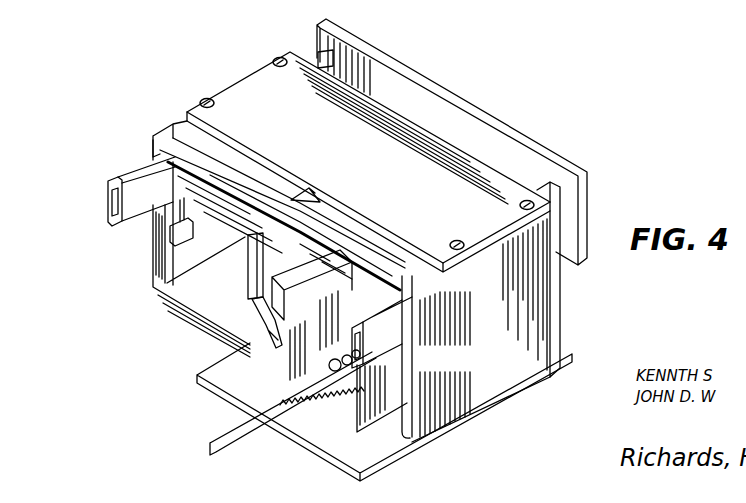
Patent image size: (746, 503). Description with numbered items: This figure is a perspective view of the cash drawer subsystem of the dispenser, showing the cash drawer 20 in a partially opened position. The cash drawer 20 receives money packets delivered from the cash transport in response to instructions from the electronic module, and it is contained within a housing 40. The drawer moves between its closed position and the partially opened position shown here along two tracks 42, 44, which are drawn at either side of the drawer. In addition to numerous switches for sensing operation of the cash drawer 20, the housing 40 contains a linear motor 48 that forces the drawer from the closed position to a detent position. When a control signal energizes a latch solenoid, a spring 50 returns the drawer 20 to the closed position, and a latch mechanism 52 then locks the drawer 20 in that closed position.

The cash drawer 20 is at (150, 167).
The housing 40 is at (545, 345).
The track 42 is at (390, 350).
The track 44 is at (110, 208).
The linear motor 48 is at (338, 300).
The spring 50 is at (277, 395).
The latch mechanism 52 is at (240, 322).